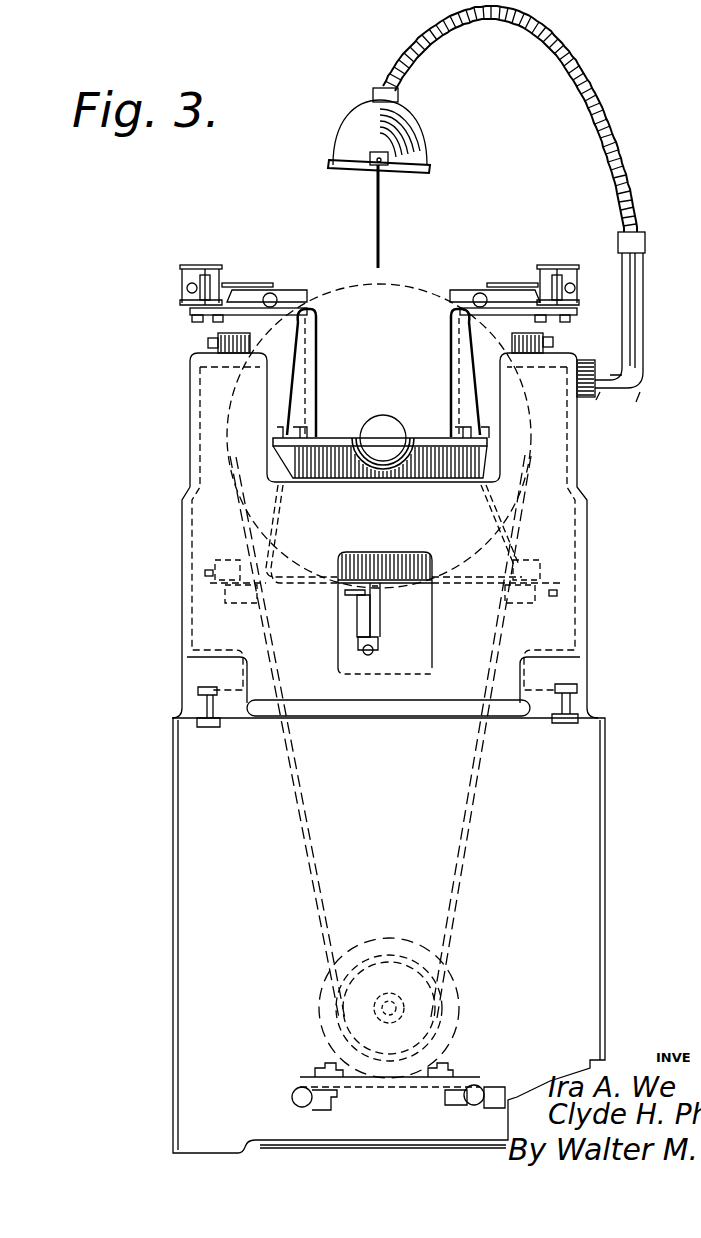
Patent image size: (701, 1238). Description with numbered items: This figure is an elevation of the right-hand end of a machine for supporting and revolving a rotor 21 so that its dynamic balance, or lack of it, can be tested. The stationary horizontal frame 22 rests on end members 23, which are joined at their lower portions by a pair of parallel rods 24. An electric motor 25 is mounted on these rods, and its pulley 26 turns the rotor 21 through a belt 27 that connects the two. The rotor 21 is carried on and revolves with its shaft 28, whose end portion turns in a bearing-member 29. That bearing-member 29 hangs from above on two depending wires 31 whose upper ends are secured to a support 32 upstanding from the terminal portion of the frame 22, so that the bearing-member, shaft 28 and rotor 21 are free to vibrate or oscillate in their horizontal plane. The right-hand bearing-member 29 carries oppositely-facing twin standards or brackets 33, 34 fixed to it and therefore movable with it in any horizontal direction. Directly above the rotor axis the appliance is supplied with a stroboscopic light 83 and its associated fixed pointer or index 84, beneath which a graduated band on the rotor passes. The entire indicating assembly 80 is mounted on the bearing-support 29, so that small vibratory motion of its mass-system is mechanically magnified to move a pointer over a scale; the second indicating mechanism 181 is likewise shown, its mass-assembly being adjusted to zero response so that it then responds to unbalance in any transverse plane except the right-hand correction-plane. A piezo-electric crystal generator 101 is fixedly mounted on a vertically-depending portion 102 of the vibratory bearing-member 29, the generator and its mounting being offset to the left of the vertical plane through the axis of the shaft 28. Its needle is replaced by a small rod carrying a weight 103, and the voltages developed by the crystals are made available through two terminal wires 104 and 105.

The second indicating mechanism 181 is at (248, 286).
The fixed pointer or index 84 is at (376, 267).
The rotor 21 is at (418, 298).
The indicating appliance assembly 80 is at (515, 300).
The stroboscopic light 83 is at (407, 147).
The standard or bracket 33 is at (449, 316).
The standard or bracket 34 is at (310, 353).
The depending wire 31 is at (232, 410).
The bearing-member 29 is at (332, 448).
The shaft 28 is at (388, 424).
The support 32 is at (200, 541).
The terminal wire 105 is at (356, 597).
The terminal wire 104 is at (356, 612).
The vertically-depending portion 102 is at (380, 618).
The piezo-electric crystal generator 101 is at (360, 624).
The weight 103 is at (362, 655).
The horizontal frame 22 is at (198, 752).
The belt 27 is at (478, 795).
The electric motor 25 is at (392, 940).
The pulley 26 is at (420, 962).
The end member 23 is at (198, 953).
The parallel rod 24 is at (290, 1101).